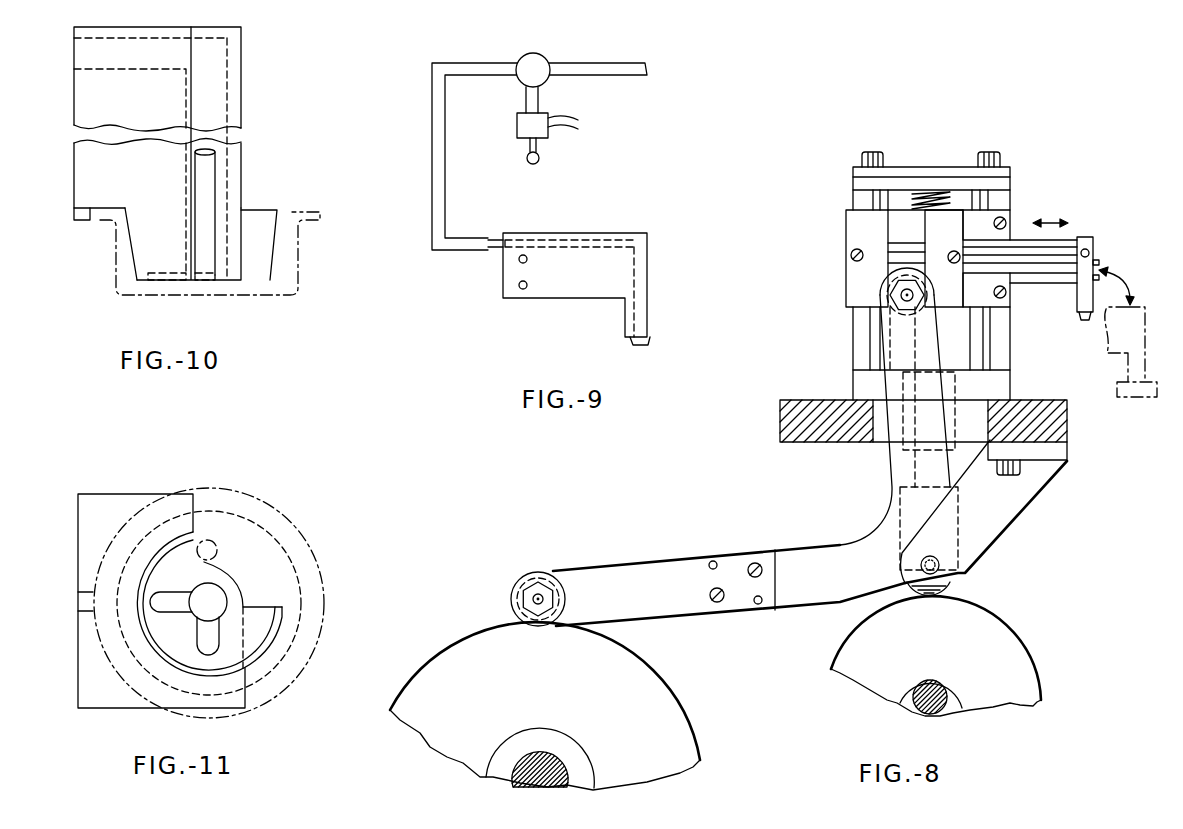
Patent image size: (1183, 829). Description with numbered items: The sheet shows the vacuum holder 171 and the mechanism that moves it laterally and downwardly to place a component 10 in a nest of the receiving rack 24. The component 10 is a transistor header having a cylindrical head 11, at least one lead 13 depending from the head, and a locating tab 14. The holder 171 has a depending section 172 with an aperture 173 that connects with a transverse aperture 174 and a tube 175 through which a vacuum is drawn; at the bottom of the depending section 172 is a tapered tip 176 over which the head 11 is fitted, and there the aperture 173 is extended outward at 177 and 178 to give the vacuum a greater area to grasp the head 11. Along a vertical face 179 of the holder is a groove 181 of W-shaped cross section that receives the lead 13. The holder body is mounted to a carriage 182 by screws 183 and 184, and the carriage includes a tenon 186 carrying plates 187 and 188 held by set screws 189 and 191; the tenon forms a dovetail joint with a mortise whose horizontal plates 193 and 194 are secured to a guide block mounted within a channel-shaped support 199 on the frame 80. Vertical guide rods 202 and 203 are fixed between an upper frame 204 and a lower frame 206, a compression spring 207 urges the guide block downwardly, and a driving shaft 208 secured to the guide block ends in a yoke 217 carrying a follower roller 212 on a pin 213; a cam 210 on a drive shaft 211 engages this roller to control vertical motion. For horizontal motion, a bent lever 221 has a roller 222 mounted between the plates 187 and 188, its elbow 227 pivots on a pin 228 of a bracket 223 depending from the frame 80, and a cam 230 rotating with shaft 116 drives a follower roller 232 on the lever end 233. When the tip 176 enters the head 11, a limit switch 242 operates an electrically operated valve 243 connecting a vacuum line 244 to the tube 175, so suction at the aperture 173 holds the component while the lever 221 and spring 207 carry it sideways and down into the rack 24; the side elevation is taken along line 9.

In FIG. 8, the section line 9— 9 is at (1152, 204).
In FIG. 10, the electrical component 10 is at (303, 273).
In FIG. 11, the electrical component 10 is at (266, 498).
In FIG. 10, the cylindrical head 11 is at (108, 292).
In FIG. 11, the cylindrical head 11 is at (262, 686).
In FIG. 9, the cylindrical head 11 is at (602, 344).
In FIG. 10, the lead 13 is at (215, 212).
In FIG. 11, the lead 13 is at (216, 544).
In FIG. 10, the locating tab 14 is at (77, 216).
In FIG. 11, the locating tab 14 is at (80, 606).
In FIG. 8, the receiving rack 24 is at (1132, 400).
In FIG. 8, the frame 80 is at (781, 430).
In FIG. 8, the shaft 116 is at (566, 765).
In FIG. 9, the vacuum holder 171 is at (572, 229).
In FIG. 8, the vacuum holder 171 is at (1091, 234).
In FIG. 10, the depending section 172 is at (242, 172).
In FIG. 9, the depending section 172 is at (650, 323).
In FIG. 8, the depending section 172 is at (1073, 300).
In FIG. 10, the aperture 173 is at (230, 148).
In FIG. 11, the aperture 173 is at (214, 583).
In FIG. 9, the aperture 173 is at (640, 285).
In FIG. 10, the transverse aperture 174 is at (95, 70).
In FIG. 9, the transverse aperture 174 is at (594, 240).
In FIG. 9, the tube 175 is at (497, 237).
In FIG. 10, the tapered tip 176 is at (262, 210).
In FIG. 11, the tapered tip 176 is at (278, 638).
In FIG. 9, the tapered tip 176 is at (652, 343).
In FIG. 10, the outward extension of aperture 177 is at (172, 282).
In FIG. 11, the outward extension of aperture 177 is at (167, 592).
In FIG. 10, the outward extension of aperture 178 is at (208, 283).
In FIG. 11, the outward extension of aperture 178 is at (199, 632).
In FIG. 10, the vertical face 179 is at (241, 92).
In FIG. 9, the vertical face 179 is at (648, 261).
In FIG. 11, the groove 181 is at (262, 589).
In FIG. 8, the carriage 182 is at (846, 229).
In FIG. 9, the screw 183 is at (518, 259).
In FIG. 8, the screw 183 is at (1099, 262).
In FIG. 9, the screw 184 is at (520, 290).
In FIG. 8, the screw 184 is at (1102, 278).
In FIG. 8, the tenon 186 is at (1033, 286).
In FIG. 8, the plate 187 is at (850, 241).
In FIG. 8, the plate 188 is at (920, 236).
In FIG. 8, the set screw 189 is at (855, 263).
In FIG. 8, the set screw 191 is at (953, 252).
In FIG. 8, the horizontal plate 193 is at (1013, 220).
In FIG. 8, the horizontal plate 194 is at (1012, 309).
In FIG. 8, the channel-shaped support 199 is at (858, 349).
In FIG. 8, the vertical guide rod 202 is at (992, 203).
In FIG. 8, the vertical guide rod 203 is at (873, 201).
In FIG. 8, the upper frame 204 is at (1012, 173).
In FIG. 8, the lower frame 206 is at (860, 380).
In FIG. 8, the compression spring 207 is at (927, 192).
In FIG. 8, the driving shaft 208 is at (948, 349).
In FIG. 8, the cam 210 is at (1021, 640).
In FIG. 8, the drive shaft 211 is at (945, 689).
In FIG. 8, the follower roller 212 is at (951, 590).
In FIG. 8, the pin 213 is at (920, 557).
In FIG. 8, the yoke 217 is at (900, 507).
In FIG. 8, the bent lever 221 is at (691, 561).
In FIG. 8, the roller 222 is at (872, 308).
In FIG. 8, the bracket 223 is at (1034, 498).
In FIG. 8, the elbow 227 is at (848, 604).
In FIG. 8, the pin 228 is at (941, 568).
In FIG. 8, the cam 230 is at (664, 684).
In FIG. 8, the follower roller 232 is at (540, 577).
In FIG. 8, the end of lever 233 is at (529, 574).
In FIG. 9, the limit switch 242 is at (520, 127).
In FIG. 9, the electrically operated valve 243 is at (543, 84).
In FIG. 9, the vacuum line 244 is at (577, 63).